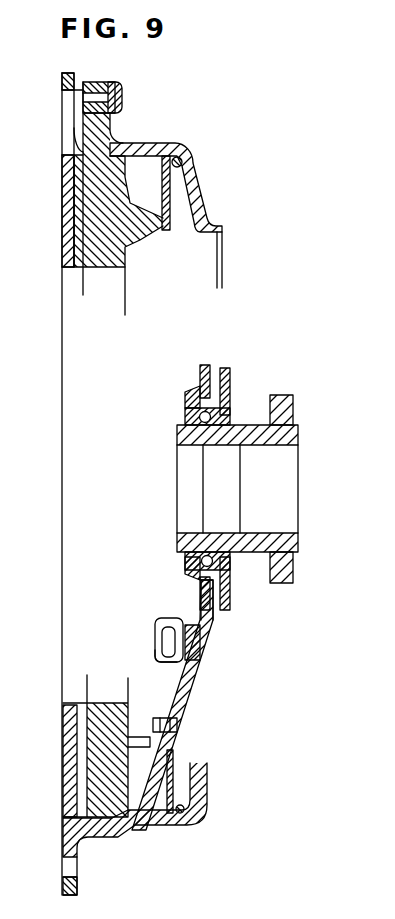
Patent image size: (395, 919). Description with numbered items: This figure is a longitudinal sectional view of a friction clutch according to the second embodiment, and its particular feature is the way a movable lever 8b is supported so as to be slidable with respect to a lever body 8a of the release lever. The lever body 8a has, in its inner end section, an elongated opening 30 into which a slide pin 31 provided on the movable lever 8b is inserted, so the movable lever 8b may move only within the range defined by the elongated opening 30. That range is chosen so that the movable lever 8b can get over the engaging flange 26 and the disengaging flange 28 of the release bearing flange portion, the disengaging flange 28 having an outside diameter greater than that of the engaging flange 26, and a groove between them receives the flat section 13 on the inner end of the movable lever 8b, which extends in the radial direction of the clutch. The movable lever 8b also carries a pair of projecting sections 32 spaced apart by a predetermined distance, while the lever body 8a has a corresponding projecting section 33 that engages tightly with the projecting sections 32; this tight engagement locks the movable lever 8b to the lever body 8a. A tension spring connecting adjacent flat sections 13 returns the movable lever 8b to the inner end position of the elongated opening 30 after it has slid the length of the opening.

The lever body 8a is at (188, 698).
The movable lever 8b is at (211, 646).
The flat section 13 is at (202, 602).
The engaging flange 26 is at (200, 592).
The disengaging flange 28 is at (228, 593).
The elongated opening 30 is at (187, 645).
The slide pin 31 is at (172, 628).
The projecting sections 32 is at (205, 622).
The projecting section 33 is at (163, 660).